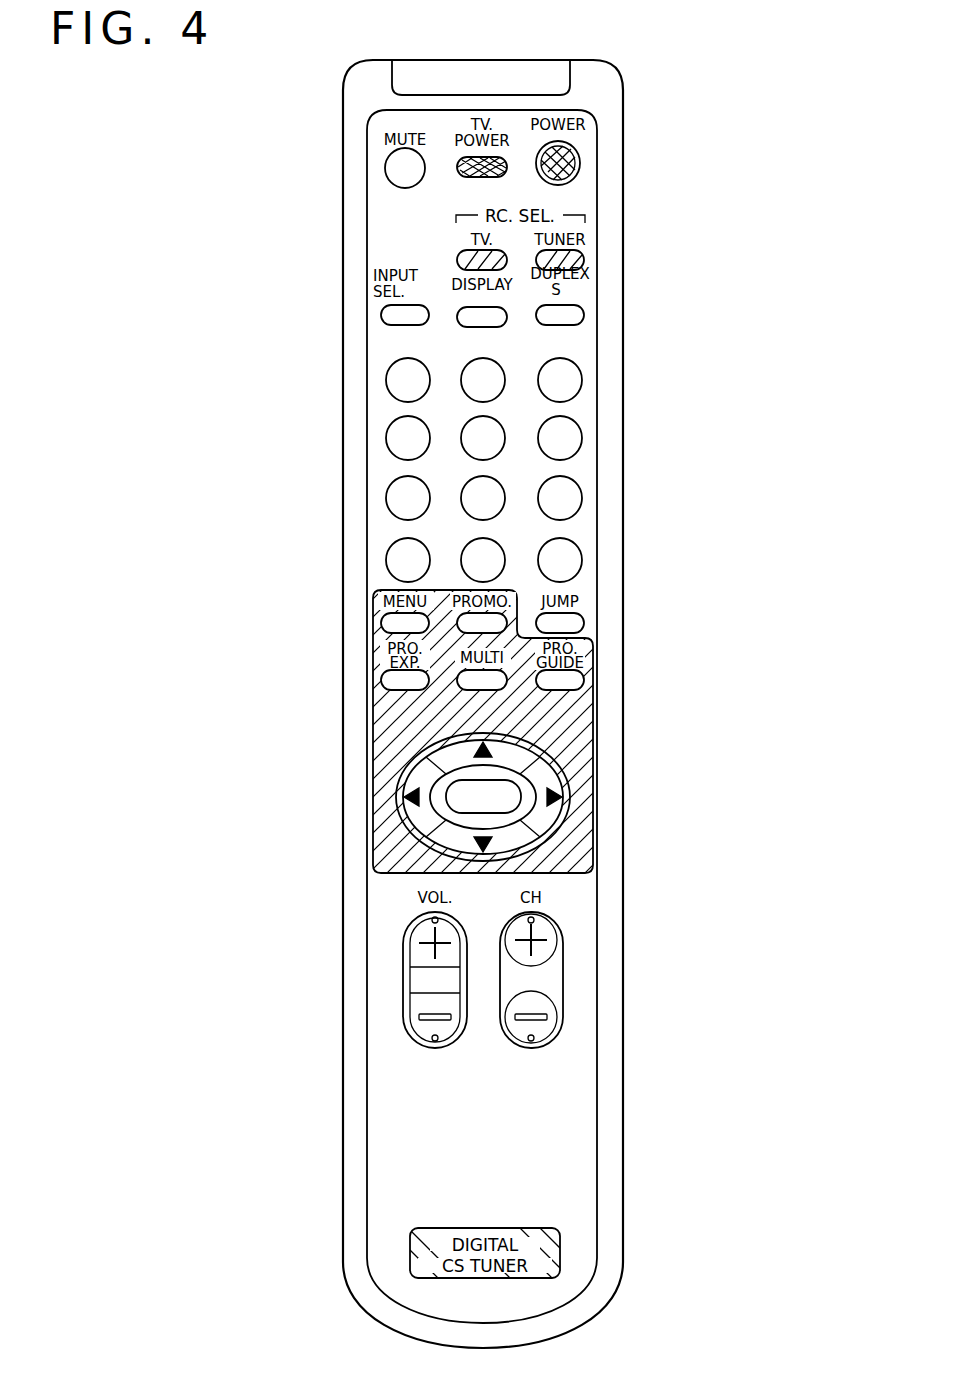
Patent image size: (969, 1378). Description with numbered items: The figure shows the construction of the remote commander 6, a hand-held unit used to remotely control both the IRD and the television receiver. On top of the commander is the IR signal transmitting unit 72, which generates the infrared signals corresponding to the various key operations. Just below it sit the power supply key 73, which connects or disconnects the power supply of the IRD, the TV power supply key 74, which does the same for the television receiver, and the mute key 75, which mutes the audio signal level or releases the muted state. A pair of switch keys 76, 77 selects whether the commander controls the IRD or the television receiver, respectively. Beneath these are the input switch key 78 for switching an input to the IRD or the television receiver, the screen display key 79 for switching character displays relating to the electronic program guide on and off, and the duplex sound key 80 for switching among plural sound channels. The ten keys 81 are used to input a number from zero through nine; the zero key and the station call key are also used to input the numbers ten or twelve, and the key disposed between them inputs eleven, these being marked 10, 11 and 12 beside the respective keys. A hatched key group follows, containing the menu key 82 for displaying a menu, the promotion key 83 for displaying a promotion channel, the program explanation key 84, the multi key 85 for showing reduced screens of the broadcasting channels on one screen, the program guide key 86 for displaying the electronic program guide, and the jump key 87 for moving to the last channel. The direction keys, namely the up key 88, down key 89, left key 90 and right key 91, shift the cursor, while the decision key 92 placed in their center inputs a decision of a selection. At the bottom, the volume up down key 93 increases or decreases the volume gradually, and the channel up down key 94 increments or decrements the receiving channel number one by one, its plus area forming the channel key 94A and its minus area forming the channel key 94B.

The remote commander 6 is at (628, 1115).
The IR signal transmitting unit 72 is at (556, 65).
The power supply key 73 is at (578, 160).
The TV power supply key 74 is at (462, 175).
The mute key 75 is at (385, 170).
The switch key 76 is at (578, 258).
The switch key 77 is at (460, 262).
The input switch key 78 is at (385, 316).
The screen display key 79 is at (466, 326).
The duplex sound key 80 is at (578, 314).
The ten keys 81 is at (539, 469).
The 0 key 10 is at (428, 570).
The blank key 11 is at (504, 570).
The SEL key 12 is at (568, 563).
The menu key 82 is at (385, 624).
The promotion key 83 is at (410, 716).
The program explanation key 84 is at (385, 680).
The multi key 85 is at (500, 688).
The program guide key 86 is at (580, 679).
The jump key 87 is at (580, 622).
The up key 88 is at (515, 750).
The down key 89 is at (512, 843).
The left key 90 is at (410, 776).
The right key 91 is at (555, 812).
The decision key 92 is at (479, 799).
The volume up down key 93 is at (410, 978).
The channel up down key 94 is at (605, 980).
The channel key 94A is at (555, 950).
The channel key 94B is at (555, 1025).